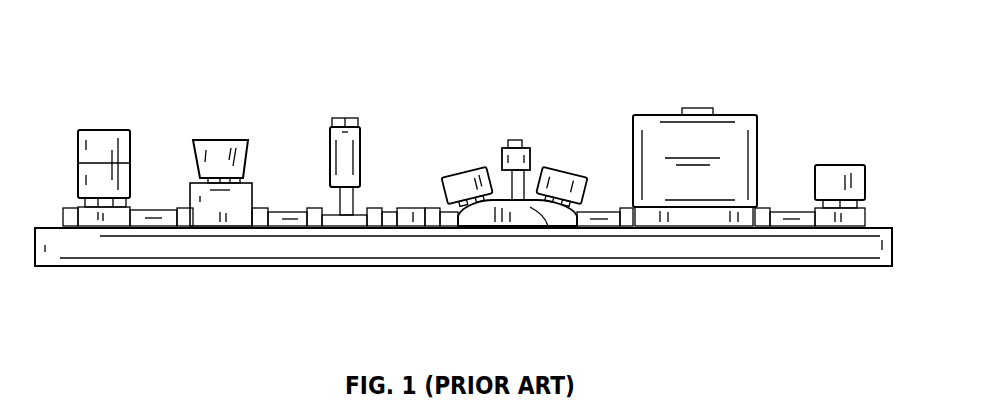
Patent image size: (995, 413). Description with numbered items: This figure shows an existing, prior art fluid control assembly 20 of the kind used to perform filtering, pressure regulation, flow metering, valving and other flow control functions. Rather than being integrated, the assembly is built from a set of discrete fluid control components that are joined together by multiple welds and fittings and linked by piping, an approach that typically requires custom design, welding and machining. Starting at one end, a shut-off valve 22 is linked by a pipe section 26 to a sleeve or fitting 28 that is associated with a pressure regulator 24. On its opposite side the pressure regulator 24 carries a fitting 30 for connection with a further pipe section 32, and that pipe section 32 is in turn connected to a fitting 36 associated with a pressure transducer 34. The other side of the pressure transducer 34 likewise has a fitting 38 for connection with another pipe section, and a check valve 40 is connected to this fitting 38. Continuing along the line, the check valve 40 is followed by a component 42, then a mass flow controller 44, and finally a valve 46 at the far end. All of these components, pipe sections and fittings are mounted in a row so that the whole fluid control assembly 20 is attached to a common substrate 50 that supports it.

The fluid control assembly 20 is at (580, 115).
The shut-off valve 22 is at (105, 138).
The pressure regulator 24 is at (218, 150).
The pipe section 26 is at (143, 223).
The fitting 28 is at (187, 225).
The fitting 30 is at (260, 227).
The pipe section 32 is at (288, 213).
The pressure transducer 34 is at (360, 150).
The fitting 36 is at (315, 227).
The fitting 38 is at (375, 210).
The check valve 40 is at (413, 223).
The component 42 is at (530, 205).
The mass flow controller 44 is at (698, 185).
The valve 46 is at (835, 177).
The substrate 50 is at (832, 250).